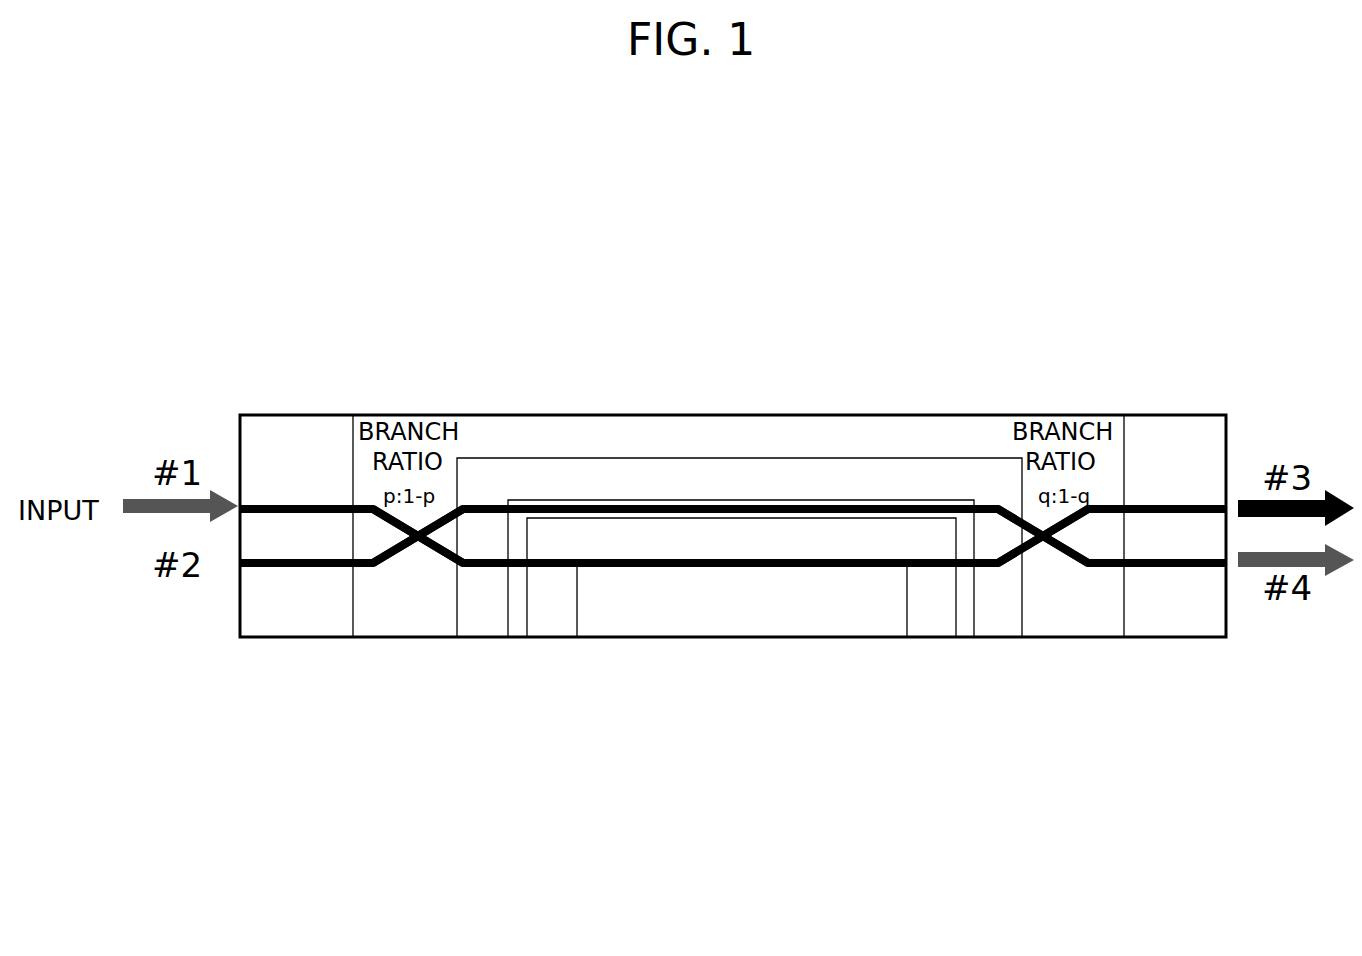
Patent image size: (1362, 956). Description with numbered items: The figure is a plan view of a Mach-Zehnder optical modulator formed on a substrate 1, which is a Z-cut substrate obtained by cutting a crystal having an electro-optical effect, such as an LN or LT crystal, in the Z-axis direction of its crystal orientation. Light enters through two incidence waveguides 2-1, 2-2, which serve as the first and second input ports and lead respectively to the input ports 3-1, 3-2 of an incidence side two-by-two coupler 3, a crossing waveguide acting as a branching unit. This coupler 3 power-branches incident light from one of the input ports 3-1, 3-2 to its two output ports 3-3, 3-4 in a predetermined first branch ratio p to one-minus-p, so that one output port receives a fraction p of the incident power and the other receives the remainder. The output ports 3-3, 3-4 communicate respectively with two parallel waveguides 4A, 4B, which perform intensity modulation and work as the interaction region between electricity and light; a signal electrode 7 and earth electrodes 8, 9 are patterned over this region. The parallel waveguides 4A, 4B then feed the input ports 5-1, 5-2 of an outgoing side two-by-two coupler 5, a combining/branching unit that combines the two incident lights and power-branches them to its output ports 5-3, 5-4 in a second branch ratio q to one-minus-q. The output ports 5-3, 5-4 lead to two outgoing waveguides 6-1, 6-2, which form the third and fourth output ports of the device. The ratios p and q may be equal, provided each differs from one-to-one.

The substrate 1 is at (1203, 425).
The incidence waveguide 2-1 is at (302, 505).
The incidence waveguide 2-2 is at (278, 568).
The incidence side 2×2 coupler 3 is at (416, 548).
The input port 3-1 is at (390, 528).
The input port 3-2 is at (388, 560).
The output port 3-3 is at (445, 512).
The output port 3-4 is at (432, 548).
The parallel waveguide 4A is at (640, 503).
The parallel waveguide 4B is at (670, 560).
The outgoing side 2×2 coupler 5 is at (1045, 550).
The input port 5-1 is at (1016, 505).
The input port 5-2 is at (1018, 572).
The output port 5-3 is at (1098, 542).
The output port 5-4 is at (1075, 565).
The outgoing waveguide 6-1 is at (1162, 505).
The outgoing waveguide 6-2 is at (1165, 567).
The signal electrode 7 is at (522, 624).
The earth electrode 8 is at (392, 617).
The earth electrode 9 is at (854, 623).